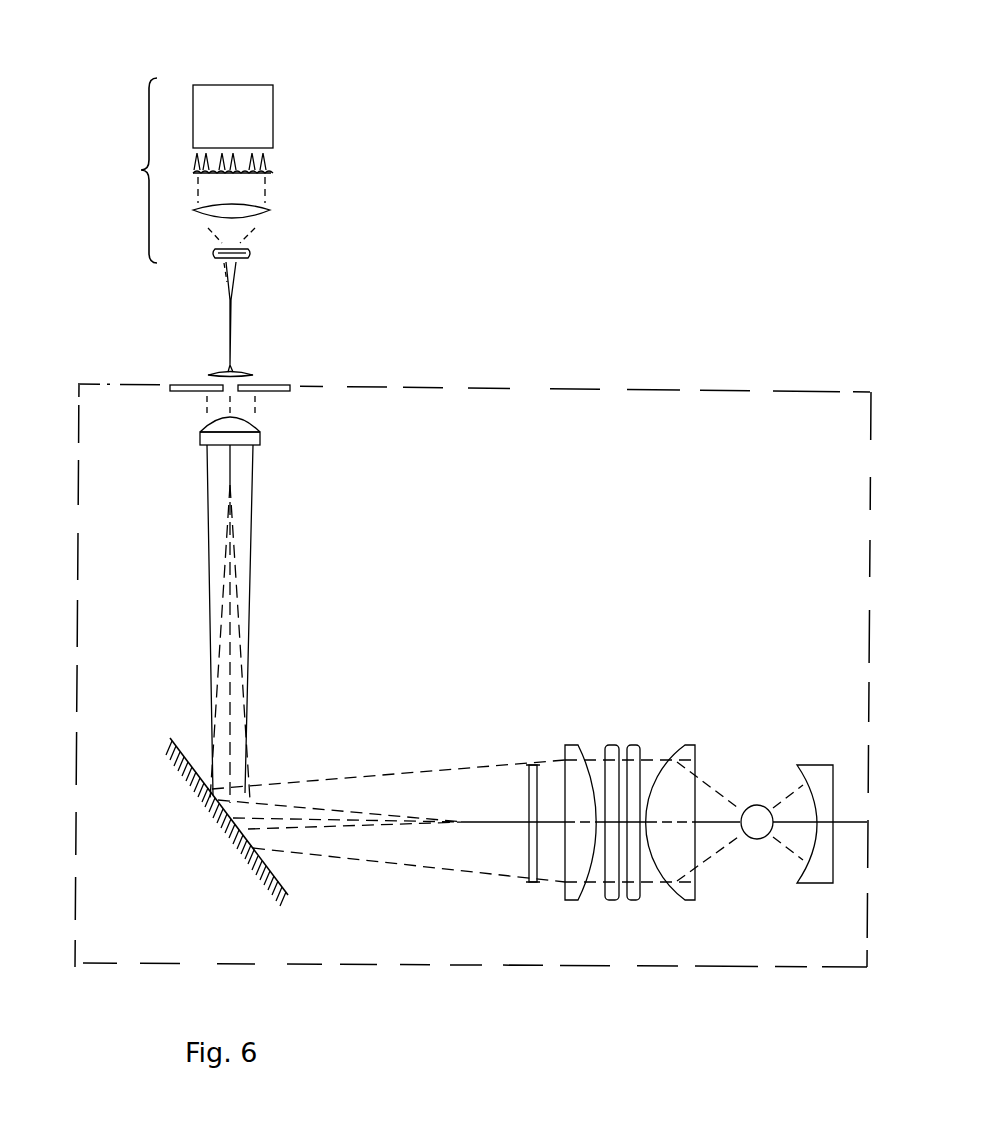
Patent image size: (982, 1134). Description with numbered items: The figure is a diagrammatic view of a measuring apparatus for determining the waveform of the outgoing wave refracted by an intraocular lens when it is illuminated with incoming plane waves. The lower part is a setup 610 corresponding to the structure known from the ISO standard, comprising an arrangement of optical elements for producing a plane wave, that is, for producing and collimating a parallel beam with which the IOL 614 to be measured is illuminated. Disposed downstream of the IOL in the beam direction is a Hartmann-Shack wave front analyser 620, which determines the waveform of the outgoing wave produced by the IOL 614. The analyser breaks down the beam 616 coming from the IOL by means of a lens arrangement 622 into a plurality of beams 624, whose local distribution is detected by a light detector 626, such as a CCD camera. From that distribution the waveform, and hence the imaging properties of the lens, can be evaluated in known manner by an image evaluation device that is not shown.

The setup 610 is at (473, 675).
The IOL 614 is at (250, 375).
The beam 616 is at (230, 290).
The wave front analyser 620 is at (272, 150).
The lens arrangement 622 is at (272, 170).
The beams 624 is at (268, 160).
The light detector 626 is at (260, 102).